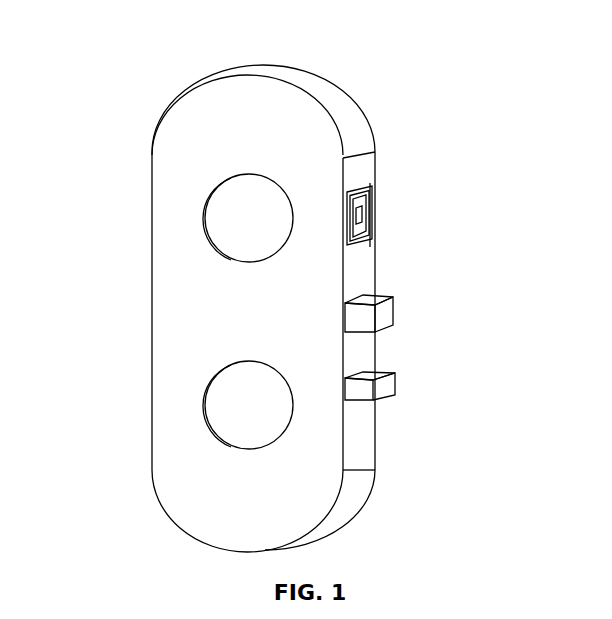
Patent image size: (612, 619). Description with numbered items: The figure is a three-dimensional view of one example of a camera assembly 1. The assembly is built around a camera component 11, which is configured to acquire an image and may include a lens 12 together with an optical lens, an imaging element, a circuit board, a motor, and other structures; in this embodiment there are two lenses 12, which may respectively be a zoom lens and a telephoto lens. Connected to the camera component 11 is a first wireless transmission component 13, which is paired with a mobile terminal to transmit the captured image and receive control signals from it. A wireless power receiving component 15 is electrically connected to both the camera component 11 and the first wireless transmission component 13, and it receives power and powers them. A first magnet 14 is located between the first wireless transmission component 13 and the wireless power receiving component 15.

The camera assembly 1 is at (438, 108).
The camera component 11 is at (168, 283).
The lens 12 is at (245, 227).
The first wireless transmission component 13 is at (367, 390).
The first magnet 14 is at (370, 316).
The wireless power receiving component 15 is at (370, 180).